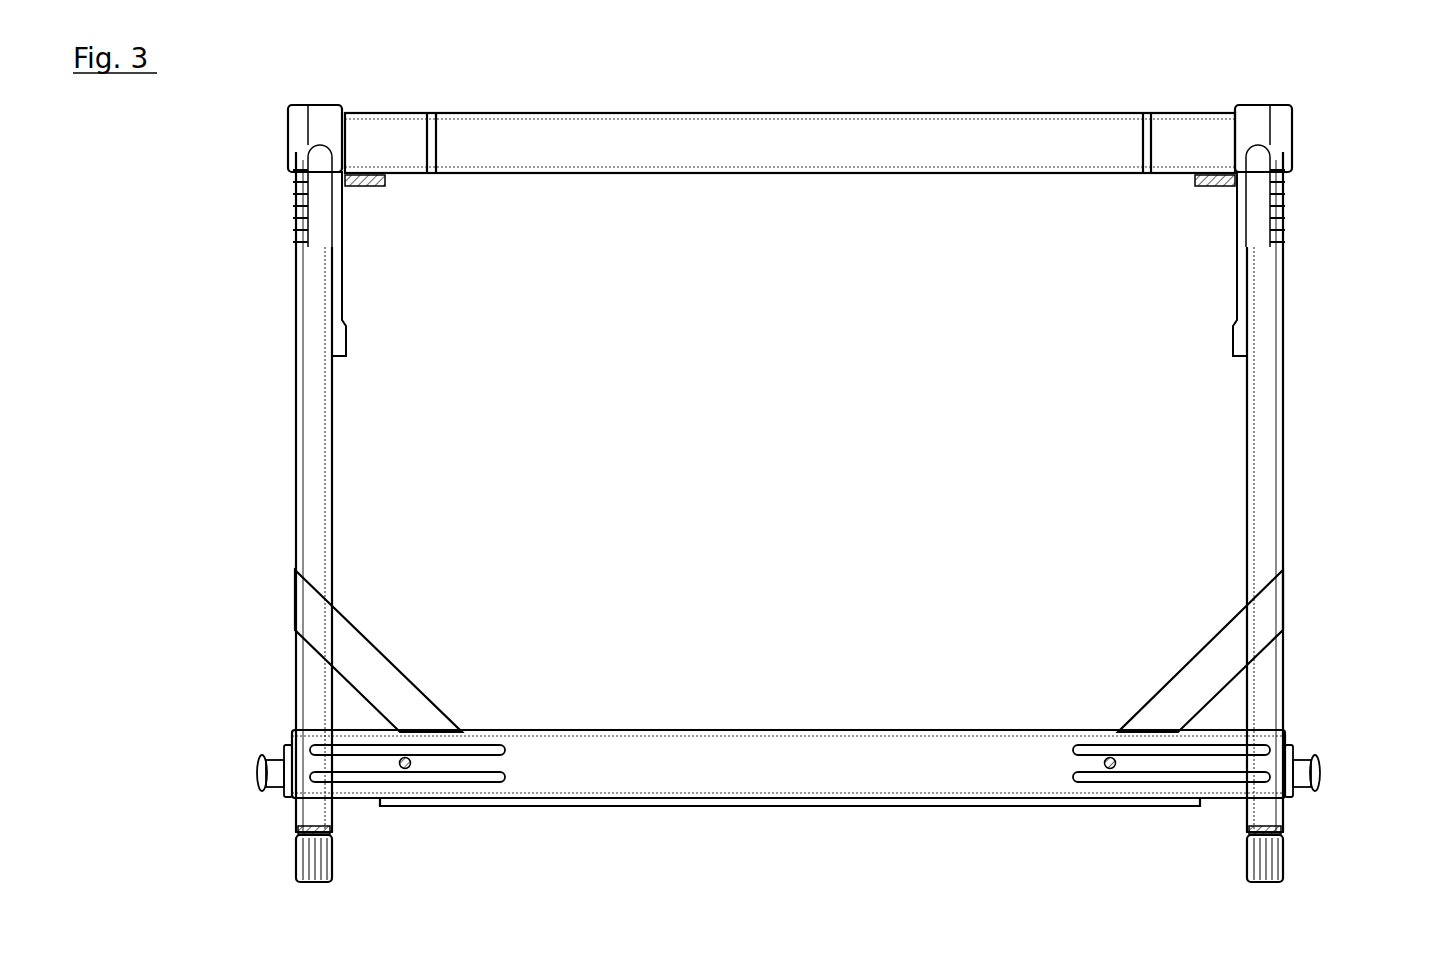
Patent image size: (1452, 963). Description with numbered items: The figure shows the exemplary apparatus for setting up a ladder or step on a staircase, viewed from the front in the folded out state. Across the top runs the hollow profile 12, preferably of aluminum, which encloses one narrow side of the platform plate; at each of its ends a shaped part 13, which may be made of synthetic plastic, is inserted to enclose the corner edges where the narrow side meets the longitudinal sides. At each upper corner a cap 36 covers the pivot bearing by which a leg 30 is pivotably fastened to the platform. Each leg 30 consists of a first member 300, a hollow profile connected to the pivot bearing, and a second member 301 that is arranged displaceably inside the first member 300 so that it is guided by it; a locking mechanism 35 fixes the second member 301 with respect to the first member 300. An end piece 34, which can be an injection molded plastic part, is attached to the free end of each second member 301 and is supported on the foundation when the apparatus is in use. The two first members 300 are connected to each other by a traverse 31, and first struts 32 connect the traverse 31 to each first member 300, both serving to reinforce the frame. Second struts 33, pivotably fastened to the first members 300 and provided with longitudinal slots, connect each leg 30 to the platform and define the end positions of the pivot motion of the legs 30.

The hollow profile 12 is at (703, 133).
The shaped part 13 is at (381, 127).
The leg 30 is at (137, 771).
The first member 300 is at (316, 386).
The second member 301 is at (312, 808).
The traverse 31 is at (788, 772).
The first strut 32 is at (366, 666).
The second strut 33 is at (341, 286).
The end piece 34 is at (330, 856).
The locking mechanism 35 is at (259, 755).
The cap 36 is at (297, 128).